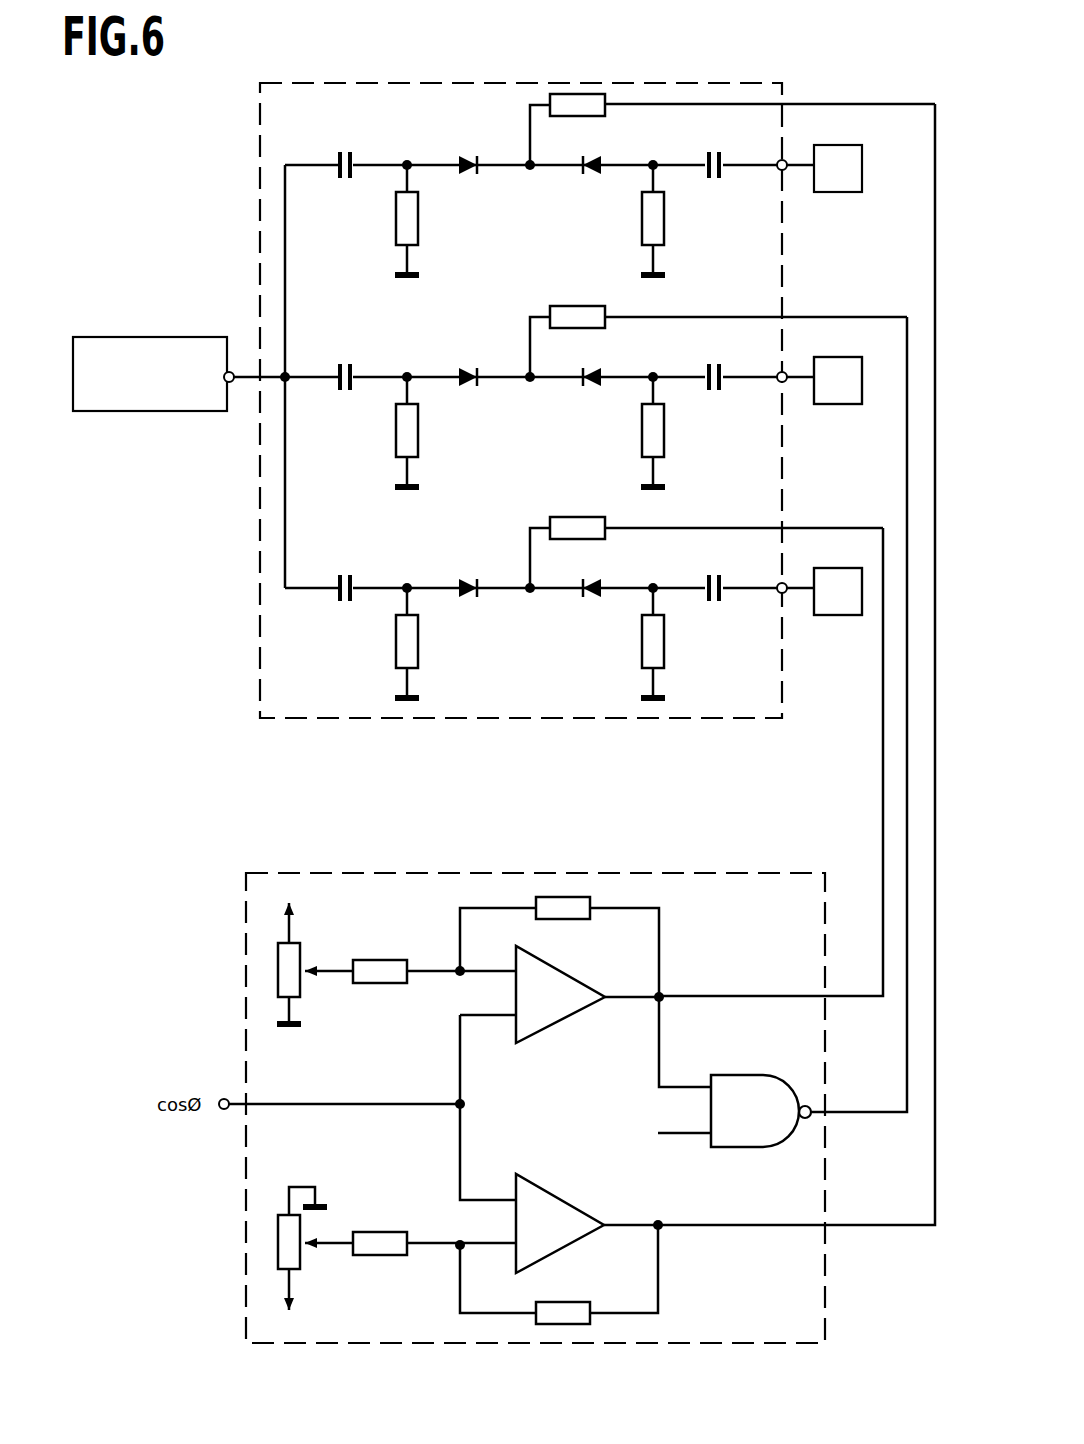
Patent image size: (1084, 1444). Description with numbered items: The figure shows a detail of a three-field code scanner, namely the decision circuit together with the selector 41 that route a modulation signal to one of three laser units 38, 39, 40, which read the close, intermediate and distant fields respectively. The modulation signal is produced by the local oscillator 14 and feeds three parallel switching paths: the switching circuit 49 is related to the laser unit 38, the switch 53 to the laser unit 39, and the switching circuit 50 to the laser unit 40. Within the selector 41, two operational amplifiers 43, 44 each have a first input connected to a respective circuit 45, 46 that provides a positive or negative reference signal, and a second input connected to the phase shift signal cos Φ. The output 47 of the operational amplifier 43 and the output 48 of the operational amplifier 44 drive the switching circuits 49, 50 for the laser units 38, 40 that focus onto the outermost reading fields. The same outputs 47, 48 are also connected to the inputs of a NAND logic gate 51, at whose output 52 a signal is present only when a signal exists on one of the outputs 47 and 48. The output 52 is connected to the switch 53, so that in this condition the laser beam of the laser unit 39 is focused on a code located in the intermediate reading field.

The local oscillator 14 is at (120, 411).
The laser unit 40 is at (540, 722).
The switching circuit 50 is at (503, 157).
The switch 53 is at (497, 357).
The switching circuit 49 is at (508, 575).
The laser unit 39 is at (842, 395).
The laser unit 38 is at (840, 606).
The selector 41 is at (690, 873).
The reference signal circuit 45 is at (278, 965).
The reference signal circuit 46 is at (278, 1245).
The operational amplifier 43 is at (556, 1000).
The operational amplifier 44 is at (557, 1208).
The NAND logic gate 51 is at (738, 1085).
The output of operational amplifier 47 is at (855, 998).
The output of NAND gate 52 is at (872, 1115).
The output of operational amplifier 48 is at (880, 1228).